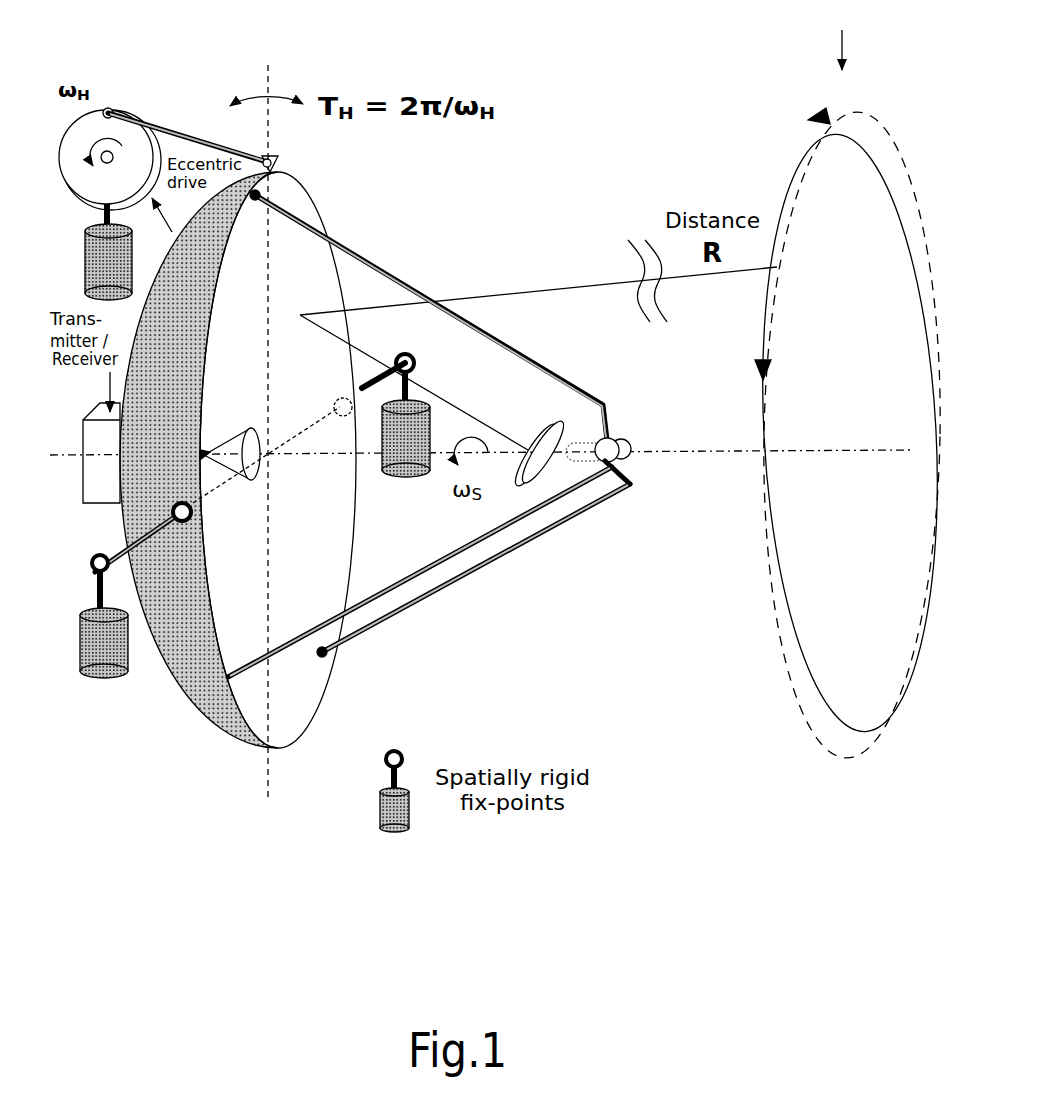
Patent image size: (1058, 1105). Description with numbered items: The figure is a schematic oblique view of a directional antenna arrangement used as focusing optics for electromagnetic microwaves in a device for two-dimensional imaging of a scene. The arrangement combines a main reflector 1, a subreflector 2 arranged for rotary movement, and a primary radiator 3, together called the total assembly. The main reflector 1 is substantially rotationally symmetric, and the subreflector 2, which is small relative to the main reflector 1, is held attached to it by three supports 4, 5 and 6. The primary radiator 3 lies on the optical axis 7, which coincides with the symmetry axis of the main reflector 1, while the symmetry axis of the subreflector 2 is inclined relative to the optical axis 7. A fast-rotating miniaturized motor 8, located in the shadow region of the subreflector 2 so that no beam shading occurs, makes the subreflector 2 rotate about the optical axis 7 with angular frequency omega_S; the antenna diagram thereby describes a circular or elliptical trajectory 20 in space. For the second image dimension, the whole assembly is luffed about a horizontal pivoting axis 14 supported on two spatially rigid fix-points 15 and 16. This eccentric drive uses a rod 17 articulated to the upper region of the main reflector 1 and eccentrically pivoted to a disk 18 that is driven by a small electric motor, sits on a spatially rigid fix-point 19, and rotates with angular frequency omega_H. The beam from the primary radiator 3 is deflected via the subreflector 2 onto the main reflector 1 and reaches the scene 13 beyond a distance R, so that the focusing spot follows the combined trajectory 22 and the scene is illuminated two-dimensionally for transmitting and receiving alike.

The main reflector 1 is at (325, 208).
The subreflector 2 is at (552, 470).
The primary radiator 3 is at (254, 489).
The support 4 is at (428, 315).
The support 5 is at (466, 580).
The support 6 is at (424, 572).
The optical axis 7 is at (723, 458).
The miniaturized motor 8 is at (636, 388).
The scene 13 is at (844, 35).
The horizontal pivoting axis 14 is at (118, 545).
The spatially rigid fix-point 15 is at (104, 637).
The spatially rigid fix-point 16 is at (458, 282).
The rod 17 is at (205, 144).
The disk 18 is at (107, 169).
The spatially rigid fix-point 19 is at (92, 252).
The trajectory 20 is at (808, 731).
The combined trajectory 22 is at (851, 730).